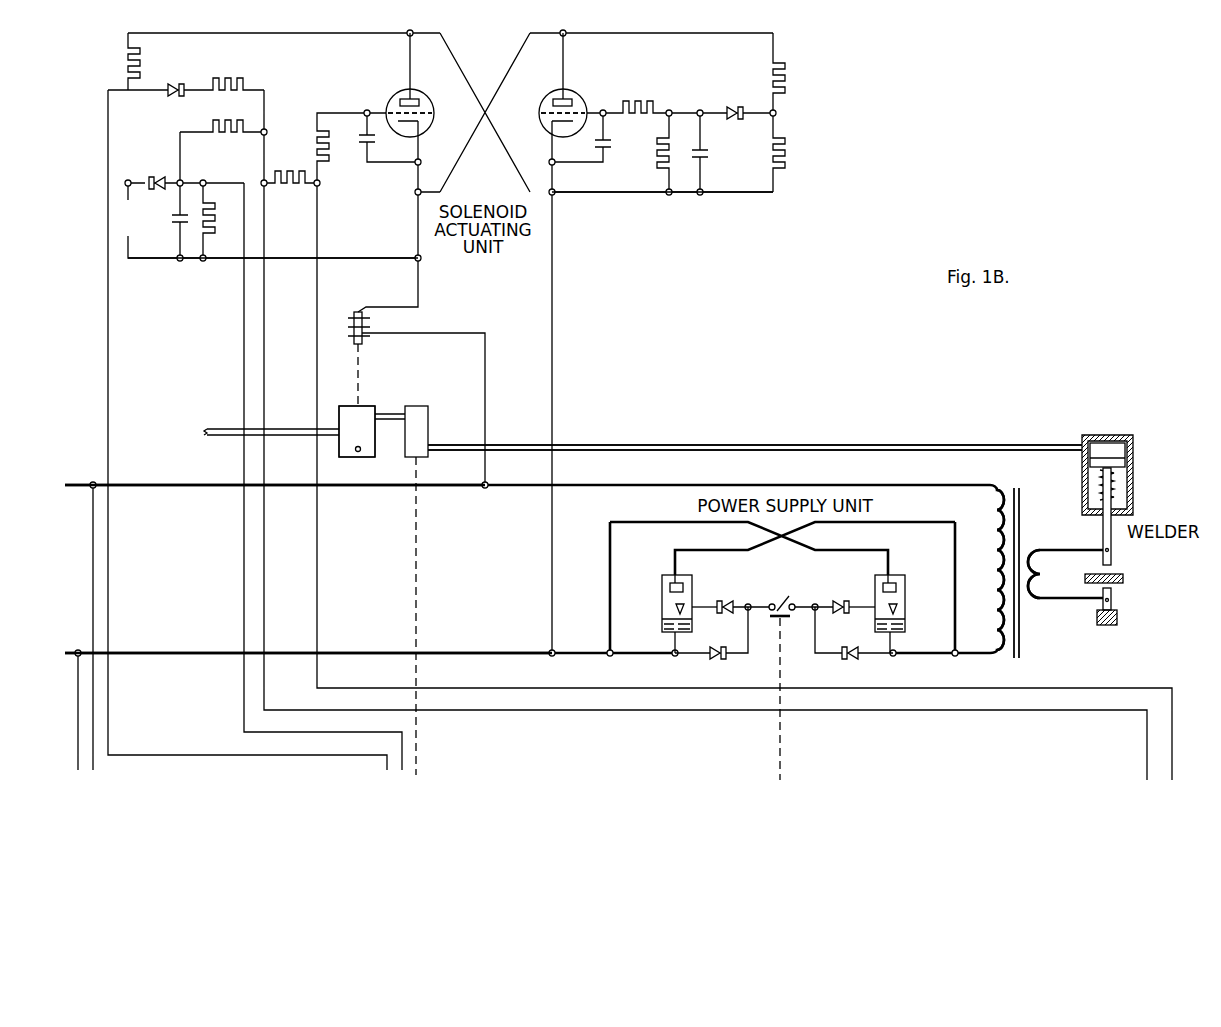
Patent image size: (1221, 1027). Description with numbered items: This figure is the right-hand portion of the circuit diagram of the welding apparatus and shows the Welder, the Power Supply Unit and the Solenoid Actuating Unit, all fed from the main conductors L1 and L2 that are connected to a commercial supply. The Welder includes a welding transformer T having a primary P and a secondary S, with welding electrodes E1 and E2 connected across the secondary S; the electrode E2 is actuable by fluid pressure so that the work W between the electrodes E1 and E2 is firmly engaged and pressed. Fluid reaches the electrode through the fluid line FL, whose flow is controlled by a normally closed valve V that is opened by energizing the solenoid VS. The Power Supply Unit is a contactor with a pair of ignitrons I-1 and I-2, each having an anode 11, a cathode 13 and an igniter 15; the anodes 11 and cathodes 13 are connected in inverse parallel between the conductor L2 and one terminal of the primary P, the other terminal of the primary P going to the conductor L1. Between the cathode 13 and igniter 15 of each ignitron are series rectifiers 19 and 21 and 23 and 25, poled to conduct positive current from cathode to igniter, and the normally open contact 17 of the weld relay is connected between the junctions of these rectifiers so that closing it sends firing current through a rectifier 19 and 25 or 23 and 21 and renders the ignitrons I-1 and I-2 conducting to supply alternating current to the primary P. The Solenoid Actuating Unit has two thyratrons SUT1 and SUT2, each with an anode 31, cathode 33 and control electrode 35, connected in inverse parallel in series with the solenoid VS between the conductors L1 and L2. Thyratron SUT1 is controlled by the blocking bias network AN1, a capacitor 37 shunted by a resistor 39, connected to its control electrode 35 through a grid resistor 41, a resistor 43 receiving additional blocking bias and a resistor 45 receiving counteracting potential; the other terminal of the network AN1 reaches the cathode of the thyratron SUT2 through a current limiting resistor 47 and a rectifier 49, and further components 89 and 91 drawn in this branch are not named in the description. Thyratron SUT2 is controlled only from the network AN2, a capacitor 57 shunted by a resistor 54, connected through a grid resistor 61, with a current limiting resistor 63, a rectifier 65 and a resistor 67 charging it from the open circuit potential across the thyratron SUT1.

The current limiting resistor 47 is at (141, 63).
The diode 89 is at (180, 84).
The resistor 91 is at (226, 80).
The resistor 45 is at (228, 124).
The rectifier 49 is at (156, 180).
The capacitor 37 is at (175, 225).
The resistor 39 is at (216, 214).
The resistor 43 is at (290, 192).
The grid resistor 41 is at (316, 141).
The anode 31 is at (416, 96).
The control electrode 35 is at (428, 110).
The cathode 33 is at (425, 121).
The grid resistor 61 is at (640, 101).
The rectifier 65 is at (738, 102).
The current limiting resistor 63 is at (788, 78).
The resistor 67 is at (788, 155).
The resistor 54 is at (657, 165).
The capacitor 57 is at (706, 160).
The anode 11 is at (670, 586).
The igniter 15 is at (673, 611).
The cathode 13 is at (662, 627).
The normally open contact 17 is at (783, 598).
The rectifier 21 is at (725, 614).
The rectifier 25 is at (840, 614).
The rectifier 19 is at (709, 660).
The rectifier 23 is at (860, 660).
The thyratron SUT1 is at (393, 93).
The thyratron SUT2 is at (577, 93).
The blocking bias network AN1 is at (212, 281).
The network AN2 is at (707, 222).
The solenoid VS is at (366, 326).
The valve V is at (360, 407).
The main conductor L1 is at (164, 470).
The main conductor L2 is at (168, 634).
The fluid line FL is at (970, 448).
The primary P is at (997, 578).
The secondary S is at (1036, 575).
The welding transformer T is at (1019, 641).
The welding electrode E1 is at (1113, 565).
The work W is at (1124, 581).
The welding electrode E2 is at (1114, 598).
The ignitron I-1 is at (694, 583).
The ignitron I-2 is at (875, 583).